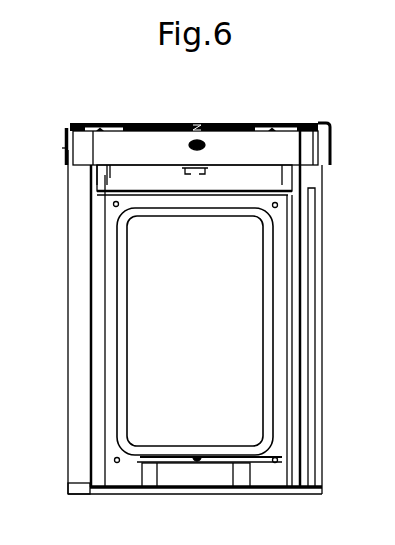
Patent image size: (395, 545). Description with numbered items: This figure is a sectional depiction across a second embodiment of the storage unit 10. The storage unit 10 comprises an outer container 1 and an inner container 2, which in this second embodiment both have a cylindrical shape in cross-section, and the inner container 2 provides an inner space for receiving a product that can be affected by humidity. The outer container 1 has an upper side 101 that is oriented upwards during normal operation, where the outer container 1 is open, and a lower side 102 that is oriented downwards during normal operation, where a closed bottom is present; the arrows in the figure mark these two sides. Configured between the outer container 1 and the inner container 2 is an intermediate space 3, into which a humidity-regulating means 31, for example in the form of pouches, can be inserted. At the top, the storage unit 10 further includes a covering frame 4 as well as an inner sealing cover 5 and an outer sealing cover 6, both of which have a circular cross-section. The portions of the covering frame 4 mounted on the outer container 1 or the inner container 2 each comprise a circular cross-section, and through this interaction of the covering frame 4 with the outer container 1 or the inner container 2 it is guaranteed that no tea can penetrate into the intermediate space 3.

The storage unit 10 is at (86, 93).
The outer container 1 is at (333, 364).
The inner container 2 is at (294, 213).
The intermediate space 3 is at (74, 309).
The humidity-regulating means 31 is at (312, 282).
The covering frame 4 is at (284, 153).
The inner sealing cover 5 is at (278, 191).
The outer sealing cover 6 is at (341, 120).
The upper side 101 is at (256, 68).
The lower side 102 is at (307, 544).